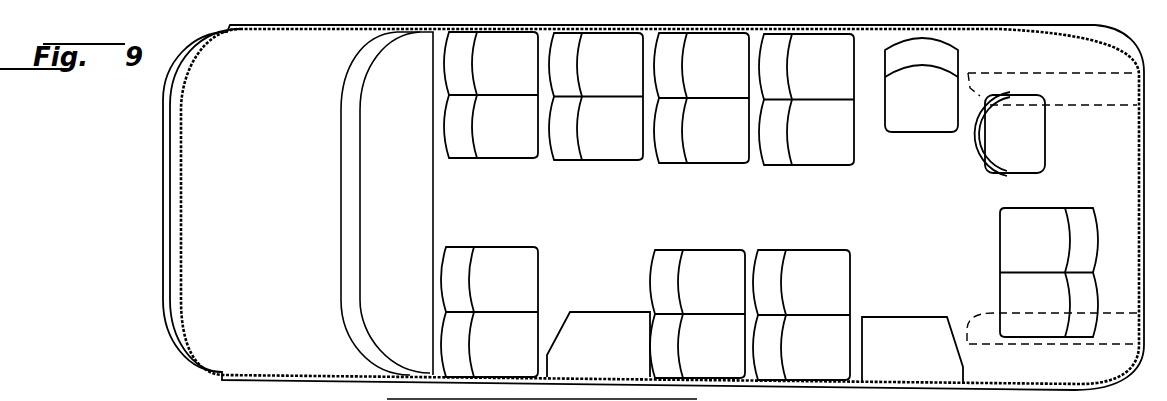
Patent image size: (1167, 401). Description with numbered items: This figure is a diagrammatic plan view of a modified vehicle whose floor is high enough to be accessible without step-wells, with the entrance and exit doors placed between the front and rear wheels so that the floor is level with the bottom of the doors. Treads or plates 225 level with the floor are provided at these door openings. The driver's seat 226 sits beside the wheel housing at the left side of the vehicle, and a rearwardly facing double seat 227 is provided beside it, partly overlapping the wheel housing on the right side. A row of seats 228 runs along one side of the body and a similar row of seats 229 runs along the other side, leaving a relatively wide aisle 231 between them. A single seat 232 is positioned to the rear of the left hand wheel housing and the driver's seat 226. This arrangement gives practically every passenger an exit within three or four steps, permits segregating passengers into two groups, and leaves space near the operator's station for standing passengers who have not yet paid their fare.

The treads or plates 225 is at (597, 323).
The driver's seat 226 is at (1030, 145).
The rearwardly facing double seat 227 is at (1055, 247).
The row of seats 228 is at (840, 138).
The row of seats 229 is at (838, 262).
The aisle 231 is at (816, 213).
The single seat 232 is at (937, 122).